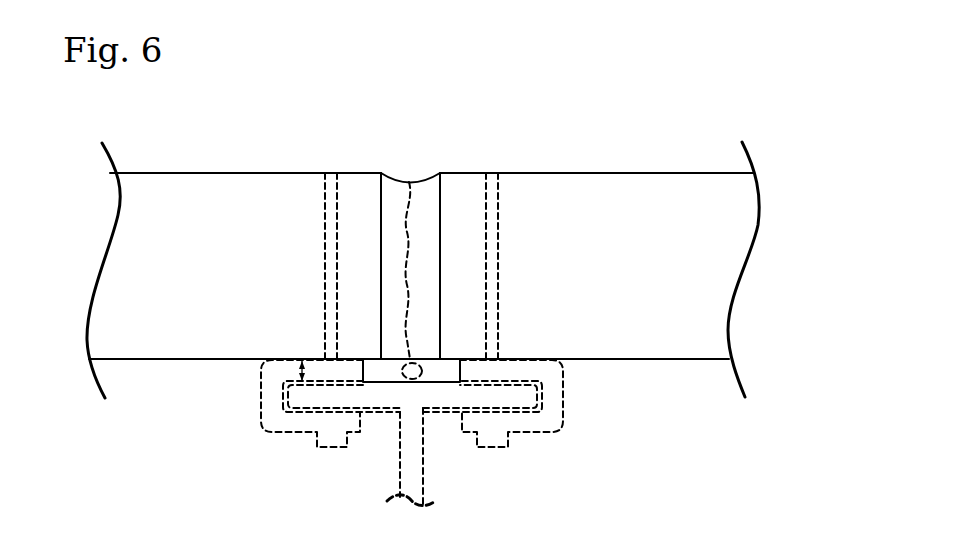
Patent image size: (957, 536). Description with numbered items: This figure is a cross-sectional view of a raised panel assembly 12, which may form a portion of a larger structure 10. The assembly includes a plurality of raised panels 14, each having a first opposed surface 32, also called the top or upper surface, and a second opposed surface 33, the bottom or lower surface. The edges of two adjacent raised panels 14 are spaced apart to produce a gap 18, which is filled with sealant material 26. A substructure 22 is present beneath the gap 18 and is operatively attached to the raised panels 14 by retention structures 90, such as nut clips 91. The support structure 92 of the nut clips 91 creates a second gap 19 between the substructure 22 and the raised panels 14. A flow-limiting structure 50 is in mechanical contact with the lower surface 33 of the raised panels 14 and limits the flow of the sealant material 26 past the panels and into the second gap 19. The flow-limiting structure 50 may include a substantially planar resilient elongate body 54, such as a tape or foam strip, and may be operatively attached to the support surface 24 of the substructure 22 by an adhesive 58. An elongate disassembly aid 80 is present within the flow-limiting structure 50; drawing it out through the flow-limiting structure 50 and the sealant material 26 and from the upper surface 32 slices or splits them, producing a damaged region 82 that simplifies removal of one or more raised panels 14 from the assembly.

The structure 10 is at (716, 56).
The raised panel assembly 12 is at (689, 97).
The raised panel 14 is at (178, 185).
The gap 18 is at (405, 170).
The second gap 19 is at (303, 371).
The substructure 22 is at (416, 473).
The support surface 24 is at (509, 378).
The sealant material 26 is at (425, 192).
The first opposed surface 32 is at (251, 172).
The second opposed surface 33 is at (137, 361).
The flow-limiting structure 50 is at (434, 357).
The resilient elongate body 54 is at (372, 384).
The adhesive 58 is at (369, 357).
The elongate disassembly aid 80 is at (420, 378).
The damaged region 82 is at (402, 236).
The retention structure 90 is at (328, 172).
The nut clip 91 is at (260, 405).
The support structure 92 is at (279, 371).